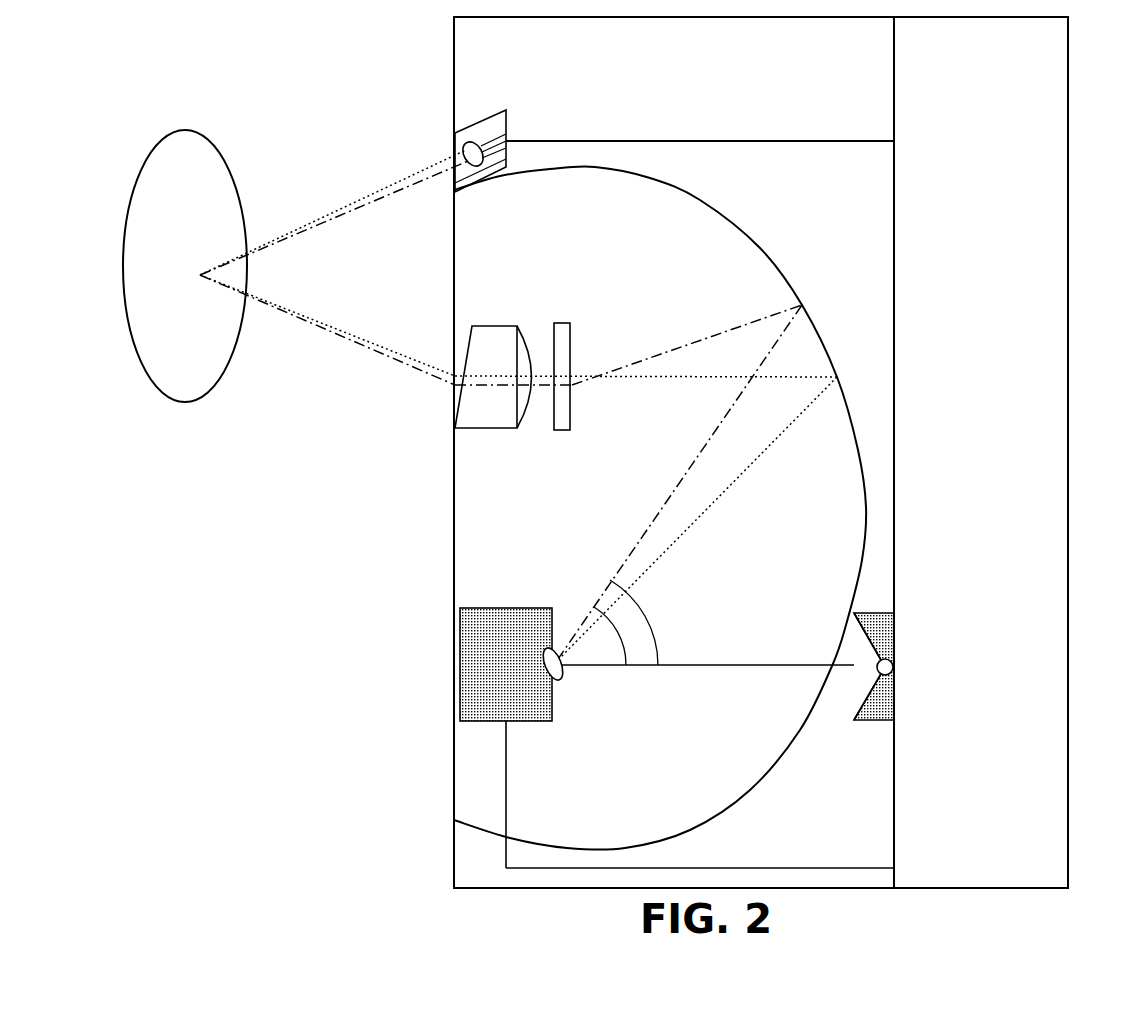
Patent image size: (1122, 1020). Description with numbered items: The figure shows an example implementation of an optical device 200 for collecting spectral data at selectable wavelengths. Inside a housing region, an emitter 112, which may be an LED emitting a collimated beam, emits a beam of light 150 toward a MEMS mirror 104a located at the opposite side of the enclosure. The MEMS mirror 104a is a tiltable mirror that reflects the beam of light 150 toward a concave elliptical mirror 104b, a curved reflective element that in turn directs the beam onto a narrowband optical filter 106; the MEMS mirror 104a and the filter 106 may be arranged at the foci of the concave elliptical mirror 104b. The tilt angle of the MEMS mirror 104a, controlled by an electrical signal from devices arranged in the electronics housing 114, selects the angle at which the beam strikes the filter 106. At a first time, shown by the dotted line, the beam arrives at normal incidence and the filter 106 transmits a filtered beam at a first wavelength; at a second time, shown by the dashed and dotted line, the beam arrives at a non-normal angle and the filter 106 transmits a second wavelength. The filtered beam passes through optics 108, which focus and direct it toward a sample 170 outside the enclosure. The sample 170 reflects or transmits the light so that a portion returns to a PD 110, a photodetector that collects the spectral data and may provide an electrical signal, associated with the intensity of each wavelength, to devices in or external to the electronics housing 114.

The optical device 200 is at (203, 56).
The sample 170 is at (202, 221).
The PD 110 is at (486, 120).
The optics 108 is at (488, 325).
The narrowband optical filter 106 is at (556, 321).
The concave elliptical mirror 104b is at (748, 237).
The MEMS mirror 104a is at (560, 680).
The beam of light 150 is at (749, 658).
The emitter 112 is at (876, 707).
The electronics housing 114 is at (1006, 476).